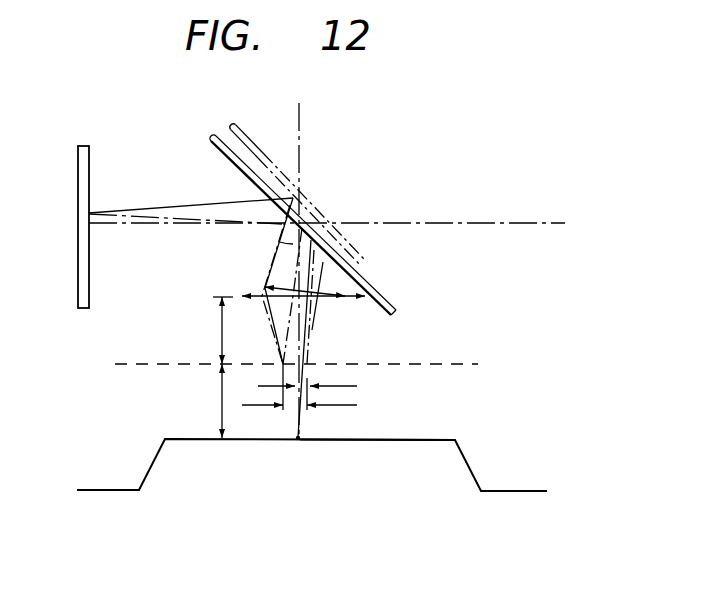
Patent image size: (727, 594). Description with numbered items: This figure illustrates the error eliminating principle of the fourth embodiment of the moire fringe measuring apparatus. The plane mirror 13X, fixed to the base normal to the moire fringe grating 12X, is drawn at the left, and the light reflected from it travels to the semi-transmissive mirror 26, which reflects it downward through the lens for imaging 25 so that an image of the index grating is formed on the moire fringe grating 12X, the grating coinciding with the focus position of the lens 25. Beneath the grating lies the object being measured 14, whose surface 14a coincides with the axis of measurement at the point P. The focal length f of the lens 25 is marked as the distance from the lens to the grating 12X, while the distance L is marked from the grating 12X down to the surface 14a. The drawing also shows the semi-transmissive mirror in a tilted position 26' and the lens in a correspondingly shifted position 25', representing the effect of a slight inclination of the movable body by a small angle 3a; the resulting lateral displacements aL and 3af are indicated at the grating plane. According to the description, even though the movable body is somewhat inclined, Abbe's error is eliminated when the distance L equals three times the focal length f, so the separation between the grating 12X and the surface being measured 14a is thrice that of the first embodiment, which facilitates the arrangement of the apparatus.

The plane mirror 13X is at (89, 172).
The semi-transmissive mirror 26 is at (287, 212).
The mirror in tilted position 26' is at (289, 171).
The deflection angle 3a is at (279, 262).
The lens for imaging 25 is at (275, 275).
The lens in tilted position 25' is at (339, 267).
The focal length f is at (220, 330).
The distance L is at (214, 401).
The moire fringe grating 12X is at (452, 363).
The lateral displacement aL is at (322, 387).
The lateral displacement 3af is at (318, 405).
The measurement point P is at (302, 435).
The object being measured 14 is at (158, 474).
The surface of the object being measured 14a is at (440, 440).